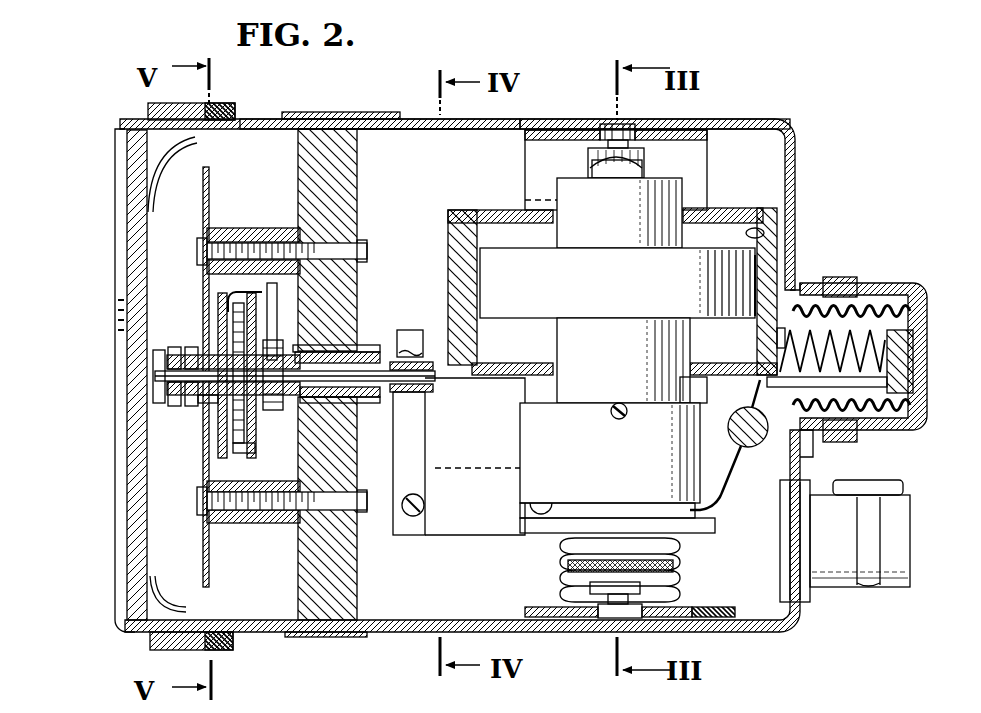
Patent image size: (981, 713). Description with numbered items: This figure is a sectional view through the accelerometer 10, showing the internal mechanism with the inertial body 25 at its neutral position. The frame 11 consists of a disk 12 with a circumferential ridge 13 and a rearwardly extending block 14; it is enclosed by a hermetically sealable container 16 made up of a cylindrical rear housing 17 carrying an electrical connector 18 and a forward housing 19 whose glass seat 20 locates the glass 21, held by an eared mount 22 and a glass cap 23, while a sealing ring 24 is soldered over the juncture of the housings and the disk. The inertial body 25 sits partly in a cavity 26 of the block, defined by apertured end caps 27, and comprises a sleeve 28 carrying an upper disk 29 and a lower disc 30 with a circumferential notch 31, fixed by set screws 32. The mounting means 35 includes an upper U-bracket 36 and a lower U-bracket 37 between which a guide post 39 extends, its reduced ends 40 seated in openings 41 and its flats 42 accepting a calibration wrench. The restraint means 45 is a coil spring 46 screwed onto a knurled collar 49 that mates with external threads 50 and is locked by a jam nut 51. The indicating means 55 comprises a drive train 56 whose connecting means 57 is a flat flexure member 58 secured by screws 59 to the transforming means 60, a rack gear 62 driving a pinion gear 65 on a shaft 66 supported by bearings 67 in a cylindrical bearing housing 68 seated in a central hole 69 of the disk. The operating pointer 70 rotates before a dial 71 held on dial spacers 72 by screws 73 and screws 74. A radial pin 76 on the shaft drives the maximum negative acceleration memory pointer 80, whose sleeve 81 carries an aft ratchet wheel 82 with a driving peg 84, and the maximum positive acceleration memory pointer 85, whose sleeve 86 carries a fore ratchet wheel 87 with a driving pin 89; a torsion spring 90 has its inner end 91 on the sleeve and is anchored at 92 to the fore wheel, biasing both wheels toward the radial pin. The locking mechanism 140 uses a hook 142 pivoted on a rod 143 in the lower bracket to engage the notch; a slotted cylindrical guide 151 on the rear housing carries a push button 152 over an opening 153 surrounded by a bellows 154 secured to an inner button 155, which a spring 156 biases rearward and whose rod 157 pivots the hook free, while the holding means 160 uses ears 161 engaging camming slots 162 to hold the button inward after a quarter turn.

The accelerometer 10 is at (552, 54).
The frame 11 is at (377, 130).
The disk 12 is at (345, 170).
The circumferential ridge 13 is at (320, 637).
The rearwardly extending block 14 is at (425, 212).
The container 16 is at (763, 117).
The rear housing 17 is at (703, 118).
The electrical connector 18 is at (880, 597).
The forward housing 19 is at (270, 118).
The glass seat 20 is at (190, 148).
The glass 21 is at (128, 244).
The eared mount 22 is at (228, 104).
The glass cap 23 is at (158, 112).
The sealing ring 24 is at (335, 112).
The inertial body 25 is at (710, 192).
The cavity 26 is at (763, 236).
The apertured end caps 27 is at (480, 375).
The sleeve 28 is at (632, 360).
The upper disk 29 is at (617, 248).
The lower disc 30 is at (610, 453).
The circumferential notch 31 is at (554, 495).
The set screws 32 is at (616, 404).
The mounting means 35 is at (545, 619).
The upper U-bracket 36 is at (525, 165).
The lower U-bracket 37 is at (700, 618).
The guide post 39 is at (645, 170).
The reduced ends 40 is at (608, 126).
The openings 41 is at (622, 130).
The flats 42 is at (615, 162).
The restraint means 45 is at (545, 588).
The coil spring 46 is at (682, 543).
The collar 49 is at (676, 566).
The external threads 50 is at (642, 589).
The jam nut 51 is at (580, 548).
The indicating means 55 is at (195, 348).
The drive train 56 is at (420, 566).
The connecting means 57 is at (450, 535).
The flat flexure member 58 is at (468, 504).
The screws 59 is at (410, 517).
The transforming means 60 is at (385, 352).
The rack gear 62 is at (420, 420).
The pinion gear 65 is at (395, 392).
The shaft 66 is at (162, 372).
The bearings 67 is at (410, 340).
The cylindrical bearing housing 68 is at (352, 351).
The central hole 69 is at (340, 398).
The operating pointer 70 is at (165, 386).
The dial 71 is at (200, 208).
The dial spacers 72 is at (232, 228).
The screws 73 is at (199, 248).
The screws 74 is at (352, 252).
The radial pin 76 is at (300, 350).
The maximum negative acceleration memory pointer 80 is at (172, 398).
The sleeve 81 is at (178, 350).
The aft ratchet wheel 82 is at (260, 428).
The driving peg 84 is at (255, 303).
The maximum positive acceleration memory pointer 85 is at (176, 402).
The sleeve 86 is at (222, 345).
The fore ratchet wheel 87 is at (232, 430).
The driving pin 89 is at (224, 298).
The torsion spring 90 is at (244, 455).
The inner end 91 is at (207, 398).
The anchor 92 is at (262, 300).
The locking mechanism 140 is at (830, 556).
The hook 142 is at (735, 497).
The rod 143 is at (746, 422).
The slotted cylindrical guide 151 is at (858, 296).
The push button 152 is at (900, 290).
The opening 153 is at (776, 324).
The bellows 154 is at (752, 310).
The inner button 155 is at (880, 394).
The spring 156 is at (795, 345).
The rod 157 is at (734, 457).
The holding means 160 is at (809, 336).
The ears 161 is at (840, 277).
The camming slots 162 is at (822, 290).